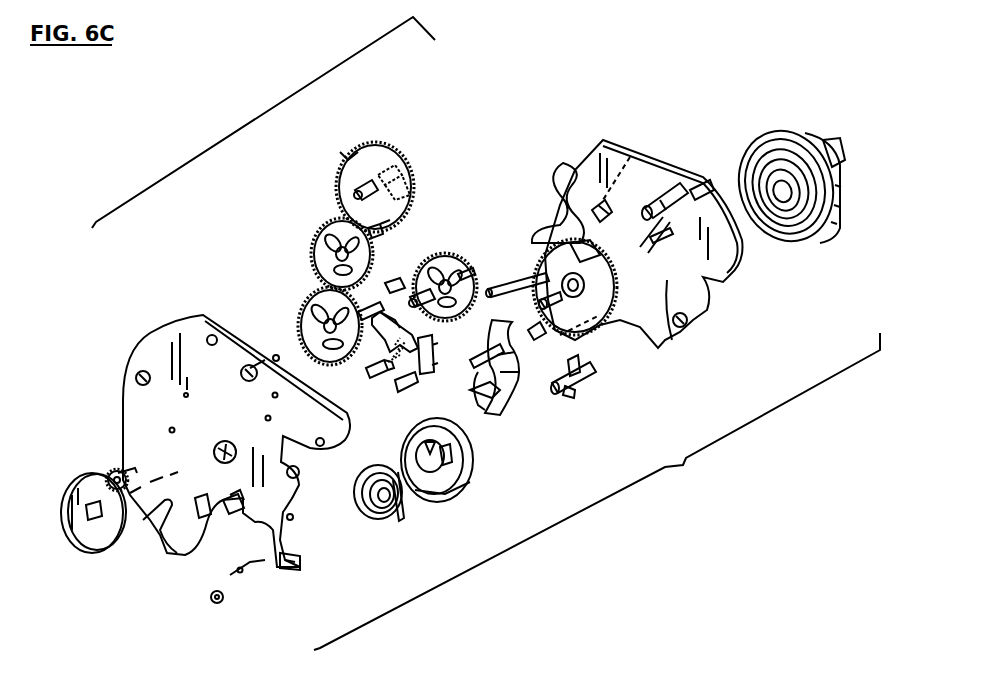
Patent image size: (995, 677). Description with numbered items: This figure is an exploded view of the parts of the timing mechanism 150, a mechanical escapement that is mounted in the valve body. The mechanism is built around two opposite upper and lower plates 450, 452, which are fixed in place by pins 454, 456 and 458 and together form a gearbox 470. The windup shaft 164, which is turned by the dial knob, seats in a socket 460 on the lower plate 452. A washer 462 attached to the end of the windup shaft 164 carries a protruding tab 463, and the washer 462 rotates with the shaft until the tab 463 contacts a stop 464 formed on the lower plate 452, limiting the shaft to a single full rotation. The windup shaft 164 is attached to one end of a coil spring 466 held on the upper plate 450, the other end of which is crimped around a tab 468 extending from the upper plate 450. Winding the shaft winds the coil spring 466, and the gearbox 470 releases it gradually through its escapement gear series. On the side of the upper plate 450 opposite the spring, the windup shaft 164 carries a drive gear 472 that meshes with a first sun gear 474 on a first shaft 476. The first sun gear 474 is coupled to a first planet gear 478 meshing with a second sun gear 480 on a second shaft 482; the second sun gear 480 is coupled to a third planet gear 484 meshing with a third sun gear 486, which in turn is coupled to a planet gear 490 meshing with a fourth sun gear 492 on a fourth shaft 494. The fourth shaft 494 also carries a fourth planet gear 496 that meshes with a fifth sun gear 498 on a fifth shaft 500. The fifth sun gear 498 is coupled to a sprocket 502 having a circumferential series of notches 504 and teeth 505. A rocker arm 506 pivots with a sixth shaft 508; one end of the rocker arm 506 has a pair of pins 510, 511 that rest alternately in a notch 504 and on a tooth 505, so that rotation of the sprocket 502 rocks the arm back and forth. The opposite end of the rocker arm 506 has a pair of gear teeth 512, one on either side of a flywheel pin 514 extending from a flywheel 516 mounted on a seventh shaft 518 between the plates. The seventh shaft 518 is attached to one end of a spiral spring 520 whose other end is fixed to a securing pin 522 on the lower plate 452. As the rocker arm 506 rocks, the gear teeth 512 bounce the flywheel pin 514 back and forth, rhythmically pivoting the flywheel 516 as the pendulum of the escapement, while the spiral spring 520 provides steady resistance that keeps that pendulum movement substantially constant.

The timing mechanism 150 is at (597, 491).
The windup shaft 164 is at (710, 177).
The upper plate 450 is at (727, 282).
The lower plate 452 is at (153, 350).
The pin 454 is at (510, 262).
The pin 456 is at (667, 170).
The pin 458 is at (600, 390).
The socket 460 is at (213, 450).
The washer 462 is at (77, 547).
The protruding tab 463 is at (123, 550).
The stop 464 is at (222, 510).
The coil spring 466 is at (827, 232).
The tab 468 is at (630, 153).
The gearbox 470 is at (259, 118).
The drive gear 472 is at (560, 207).
The first sun gear 474 is at (377, 143).
The first shaft 476 is at (408, 167).
The first planet gear 478 is at (343, 155).
The second sun gear 480 is at (335, 225).
The second shaft 482 is at (440, 198).
The third planet gear 484 is at (300, 247).
The third sun gear 486 is at (320, 280).
The planet gear 490 is at (300, 303).
The fourth sun gear 492 is at (392, 280).
The fourth shaft 494 is at (473, 257).
The fourth planet gear 496 is at (447, 242).
The fifth sun gear 498 is at (386, 320).
The fifth shaft 500 is at (442, 354).
The sprocket 502 is at (377, 390).
The notch 504 is at (412, 390).
The tooth 505 is at (488, 400).
The rocker arm 506 is at (512, 380).
The sixth shaft 508 is at (512, 350).
The pin 510 is at (540, 298).
The pin 511 is at (488, 383).
The pair of gear teeth 512 is at (500, 405).
The flywheel pin 514 is at (457, 497).
The flywheel 516 is at (455, 510).
The seventh shaft 518 is at (573, 377).
The spiral spring 520 is at (392, 522).
The securing pin 522 is at (303, 542).